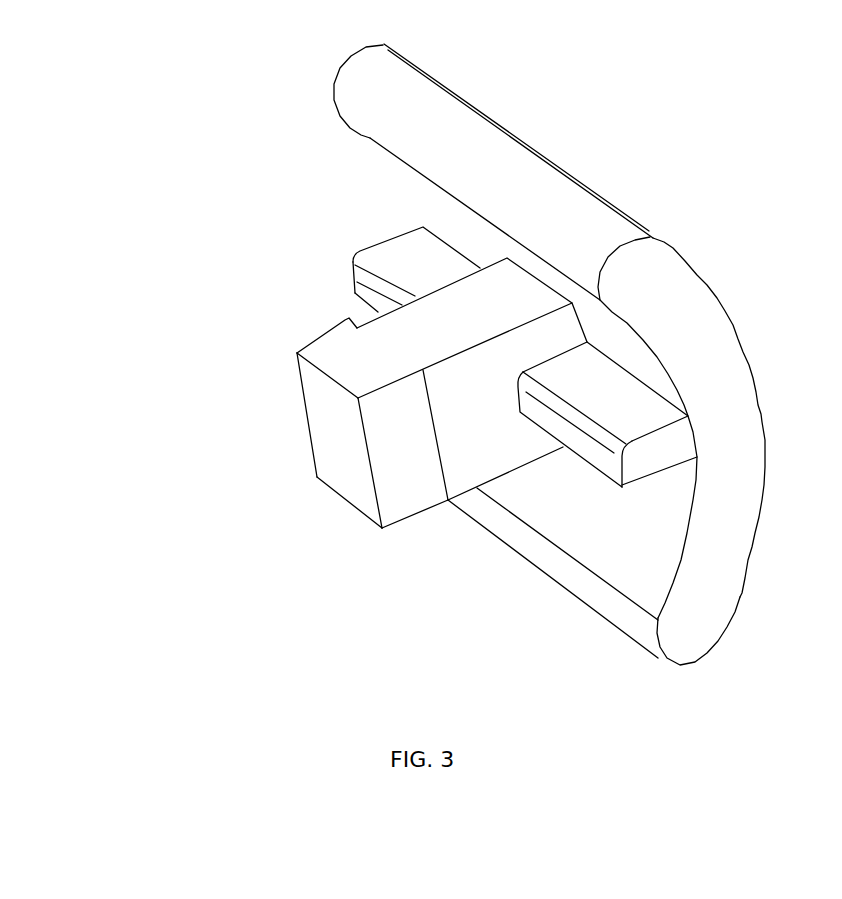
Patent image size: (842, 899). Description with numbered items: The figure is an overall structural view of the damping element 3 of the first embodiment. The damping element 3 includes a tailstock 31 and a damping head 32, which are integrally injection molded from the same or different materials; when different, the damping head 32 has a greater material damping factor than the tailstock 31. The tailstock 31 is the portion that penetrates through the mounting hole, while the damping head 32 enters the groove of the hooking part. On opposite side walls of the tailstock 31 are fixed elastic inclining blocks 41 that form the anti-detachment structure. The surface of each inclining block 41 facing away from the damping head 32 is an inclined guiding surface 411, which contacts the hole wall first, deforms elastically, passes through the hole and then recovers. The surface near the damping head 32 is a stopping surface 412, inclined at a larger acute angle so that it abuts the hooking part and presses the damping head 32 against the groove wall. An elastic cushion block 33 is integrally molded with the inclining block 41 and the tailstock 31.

The damping element 3 is at (107, 33).
The tailstock 31 is at (388, 332).
The damping head 32 is at (372, 85).
The elastic cushion block 33 is at (410, 258).
The inclining block 41 is at (127, 418).
The inclined guiding surface 411 is at (407, 452).
The stopping surface 412 is at (420, 372).